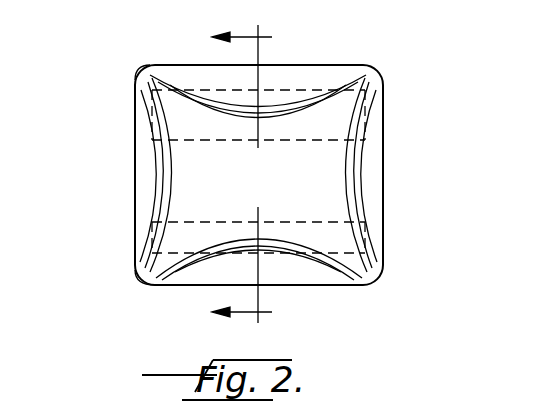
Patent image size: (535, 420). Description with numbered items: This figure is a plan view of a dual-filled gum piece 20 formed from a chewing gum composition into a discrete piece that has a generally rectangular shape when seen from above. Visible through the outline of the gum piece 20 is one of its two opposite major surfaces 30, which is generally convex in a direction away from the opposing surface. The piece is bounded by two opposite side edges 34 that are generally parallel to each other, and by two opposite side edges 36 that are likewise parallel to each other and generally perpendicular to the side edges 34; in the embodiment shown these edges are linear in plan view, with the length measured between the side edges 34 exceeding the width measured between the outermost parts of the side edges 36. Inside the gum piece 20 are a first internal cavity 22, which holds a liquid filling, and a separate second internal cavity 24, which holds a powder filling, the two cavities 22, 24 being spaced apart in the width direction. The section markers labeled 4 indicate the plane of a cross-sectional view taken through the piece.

The gum piece 20 is at (130, 95).
The first internal cavity 22 is at (303, 90).
The second internal cavity 24 is at (315, 220).
The major surface 30 is at (272, 187).
The side edges 34 is at (132, 173).
The side edges 36 is at (190, 65).
The section line 4- 4 is at (258, 178).